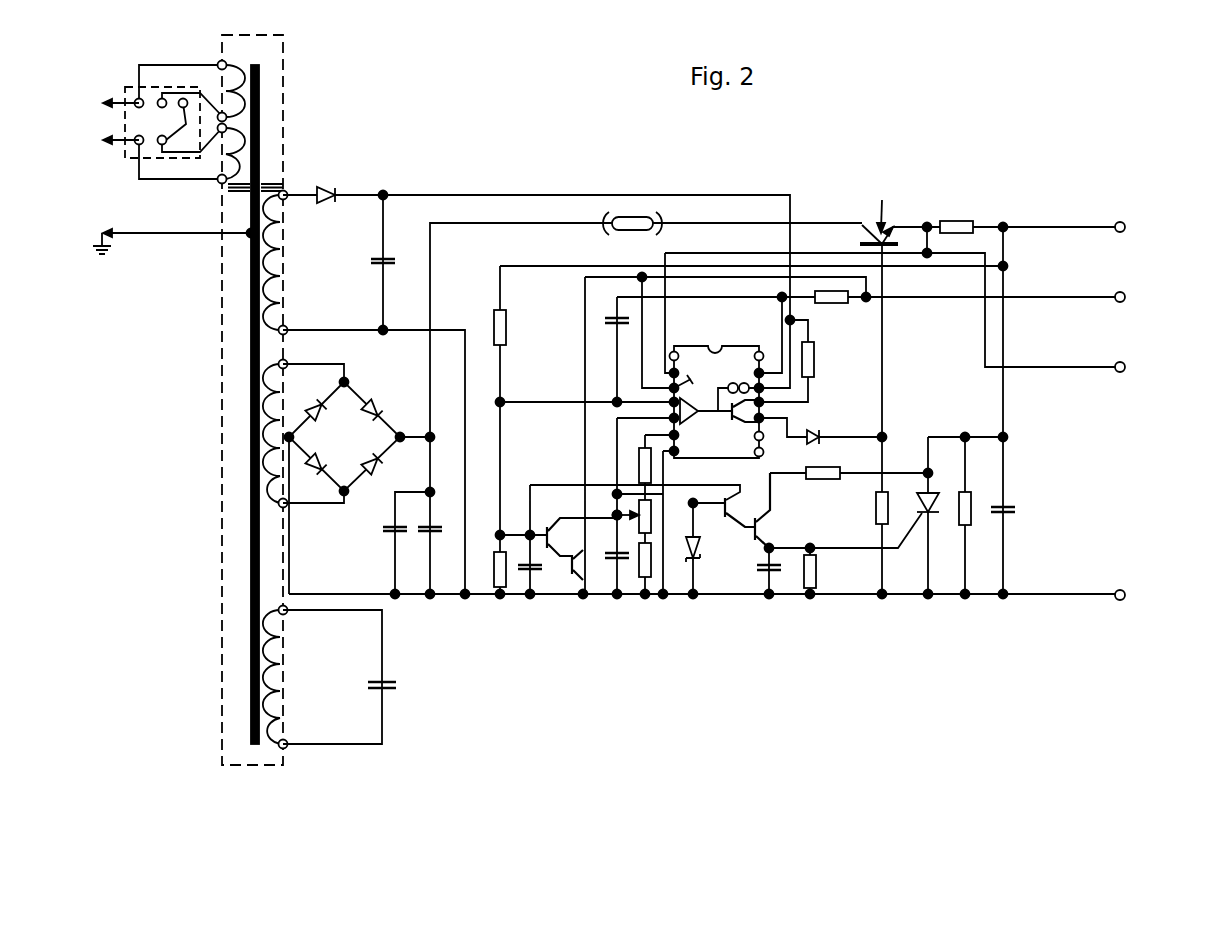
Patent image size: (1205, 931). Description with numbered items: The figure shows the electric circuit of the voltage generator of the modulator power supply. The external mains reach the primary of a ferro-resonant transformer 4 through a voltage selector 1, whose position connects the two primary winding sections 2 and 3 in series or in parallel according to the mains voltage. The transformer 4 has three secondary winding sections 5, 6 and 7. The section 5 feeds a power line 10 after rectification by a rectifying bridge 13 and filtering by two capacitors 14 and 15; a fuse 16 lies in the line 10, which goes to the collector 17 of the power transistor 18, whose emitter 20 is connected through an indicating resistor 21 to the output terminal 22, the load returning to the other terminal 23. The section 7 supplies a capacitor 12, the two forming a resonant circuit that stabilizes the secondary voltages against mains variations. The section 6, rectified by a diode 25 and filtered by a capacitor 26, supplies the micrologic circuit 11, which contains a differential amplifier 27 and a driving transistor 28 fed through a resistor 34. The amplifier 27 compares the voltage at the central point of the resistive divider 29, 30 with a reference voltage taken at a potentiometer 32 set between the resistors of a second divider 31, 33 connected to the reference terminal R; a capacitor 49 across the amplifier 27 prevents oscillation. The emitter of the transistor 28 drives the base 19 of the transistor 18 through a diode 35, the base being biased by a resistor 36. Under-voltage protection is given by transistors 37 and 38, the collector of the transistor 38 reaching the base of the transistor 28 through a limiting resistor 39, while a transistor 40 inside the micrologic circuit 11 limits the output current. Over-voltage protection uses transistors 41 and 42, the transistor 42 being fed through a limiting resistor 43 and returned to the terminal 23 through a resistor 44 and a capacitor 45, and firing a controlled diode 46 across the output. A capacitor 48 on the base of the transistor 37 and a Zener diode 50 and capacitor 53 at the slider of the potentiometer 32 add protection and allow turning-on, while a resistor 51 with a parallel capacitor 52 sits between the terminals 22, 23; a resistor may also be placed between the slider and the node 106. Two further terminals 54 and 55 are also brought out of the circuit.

The voltage selector 1 is at (133, 88).
The primary winding section 2 is at (230, 66).
The primary winding section 3 is at (245, 188).
The transformer 4 is at (287, 86).
The secondary-winding section 5 is at (276, 366).
The secondary-winding section 6 is at (276, 188).
The secondary-winding section 7 is at (276, 611).
The power line 10 is at (432, 282).
The micrologic circuit 11 is at (741, 338).
The capacitor 12 is at (396, 686).
The rectifying bridge 13 is at (350, 394).
The capacitor 14 is at (391, 533).
The capacitor 15 is at (430, 533).
The fuse 16 is at (624, 217).
The collector 17 is at (862, 225).
The power transistor 18 is at (884, 206).
The base 19 is at (863, 244).
The emitter 20 is at (893, 226).
The indicating resistor 21 is at (960, 216).
The output terminal 22 is at (1133, 217).
The terminal 23 is at (1133, 604).
The diode 25 is at (337, 189).
The capacitor 26 is at (388, 260).
The differential amplifier 27 is at (719, 410).
The driving transistor 28 is at (738, 412).
The resistor of resistive divider 29 is at (506, 328).
The resistor of resistive divider 30 is at (493, 568).
The resistor of second resistive divider 31 is at (639, 472).
The potentiometer 32 is at (639, 523).
The resistor of second resistive divider 33 is at (639, 572).
The resistor 34 is at (814, 356).
The diode 35 is at (810, 427).
The resistor 36 is at (876, 504).
The transistor 37 is at (582, 537).
The transistor 38 is at (590, 566).
The limiting resistor 39 is at (832, 304).
The transistor 40 is at (690, 378).
The transistor 41 is at (740, 512).
The transistor 42 is at (770, 510).
The limiting resistor 43 is at (822, 480).
The resistor 44 is at (816, 574).
The capacitor 45 is at (760, 572).
The controlled diode 46 is at (921, 493).
The capacitor 48 is at (536, 576).
The capacitor 49 is at (614, 324).
The Zener diode 50 is at (707, 549).
The resistor 51 is at (971, 512).
The capacitor 52 is at (1011, 514).
The capacitor 53 is at (610, 545).
The terminal 54 is at (1112, 370).
The terminal 55 is at (1112, 302).
The node 106 is at (614, 512).